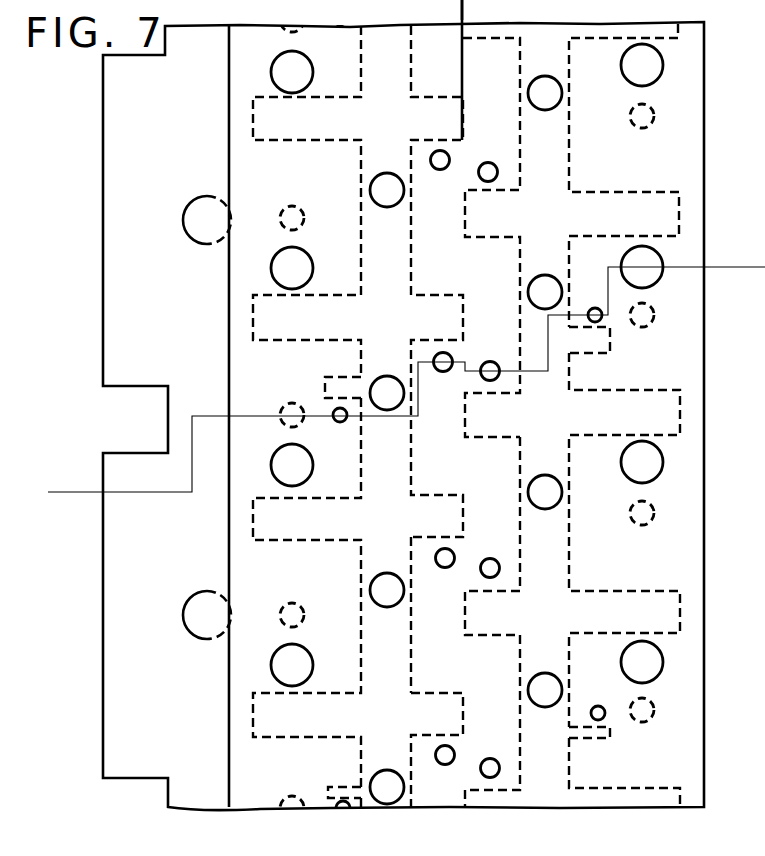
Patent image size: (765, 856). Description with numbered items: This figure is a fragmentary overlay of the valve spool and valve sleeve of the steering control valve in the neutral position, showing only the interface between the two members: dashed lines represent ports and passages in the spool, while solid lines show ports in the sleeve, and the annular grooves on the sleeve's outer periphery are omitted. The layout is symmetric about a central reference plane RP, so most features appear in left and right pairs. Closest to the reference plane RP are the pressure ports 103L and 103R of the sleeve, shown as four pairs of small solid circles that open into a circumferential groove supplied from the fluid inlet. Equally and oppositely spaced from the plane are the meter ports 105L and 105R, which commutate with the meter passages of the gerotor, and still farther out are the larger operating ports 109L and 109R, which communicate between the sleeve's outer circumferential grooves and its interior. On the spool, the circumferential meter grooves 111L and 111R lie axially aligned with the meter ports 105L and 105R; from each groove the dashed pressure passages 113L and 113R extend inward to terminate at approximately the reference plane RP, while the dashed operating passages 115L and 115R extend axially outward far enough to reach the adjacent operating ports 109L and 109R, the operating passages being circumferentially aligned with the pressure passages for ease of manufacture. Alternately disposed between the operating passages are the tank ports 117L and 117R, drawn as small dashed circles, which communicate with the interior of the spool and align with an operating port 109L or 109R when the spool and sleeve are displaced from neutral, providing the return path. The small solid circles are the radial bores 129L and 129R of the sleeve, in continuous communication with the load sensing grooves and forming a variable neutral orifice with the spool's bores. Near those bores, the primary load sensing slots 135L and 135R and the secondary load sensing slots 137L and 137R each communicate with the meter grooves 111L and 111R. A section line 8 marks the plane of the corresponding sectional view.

The central reference plane RP is at (458, 5).
The section line 8- 8 is at (63, 446).
The pressure port 103L is at (451, 154).
The pressure port 103R is at (480, 180).
The meter port 105L is at (388, 176).
The meter port 105R is at (545, 276).
The operating port 109L is at (305, 262).
The operating port 109R is at (628, 470).
The circumferential meter groove 111L is at (385, 662).
The circumferential meter groove 111R is at (540, 570).
The pressure passage 113L is at (452, 520).
The pressure passage 113R is at (478, 219).
The operating passage 115L is at (290, 522).
The operating passage 115R is at (668, 412).
The tank port 117L is at (288, 208).
The tank port 117R is at (640, 116).
The radial bore 129L is at (334, 411).
The radial bore 129R is at (604, 711).
The primary load sensing slot 135L is at (325, 383).
The primary load sensing slot 135R is at (590, 347).
The secondary load sensing slot 137L is at (350, 790).
The secondary load sensing slot 137R is at (600, 740).